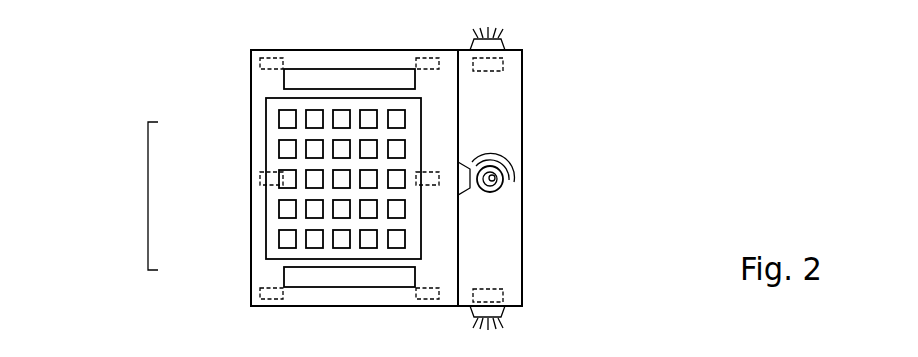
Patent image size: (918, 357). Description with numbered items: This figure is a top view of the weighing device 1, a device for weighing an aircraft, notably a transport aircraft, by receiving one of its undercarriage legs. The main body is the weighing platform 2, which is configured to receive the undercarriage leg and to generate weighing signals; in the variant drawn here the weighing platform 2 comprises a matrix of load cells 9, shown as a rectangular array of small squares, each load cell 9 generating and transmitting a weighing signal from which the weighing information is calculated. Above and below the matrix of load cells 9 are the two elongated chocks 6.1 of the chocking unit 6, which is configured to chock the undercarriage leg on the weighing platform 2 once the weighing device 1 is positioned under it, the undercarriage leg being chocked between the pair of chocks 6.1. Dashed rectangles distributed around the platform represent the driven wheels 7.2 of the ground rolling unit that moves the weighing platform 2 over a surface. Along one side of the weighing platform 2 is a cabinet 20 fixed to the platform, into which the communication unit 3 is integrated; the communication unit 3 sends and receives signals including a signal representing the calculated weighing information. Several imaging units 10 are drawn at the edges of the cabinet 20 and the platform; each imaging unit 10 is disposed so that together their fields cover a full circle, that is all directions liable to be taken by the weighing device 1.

The weighing device 1 is at (128, 51).
The weighing platform 2 is at (292, 52).
The communication unit 3 is at (505, 192).
The chocking unit 6 is at (148, 195).
The chocks 6.1 is at (284, 83).
The driven wheel 7.2 is at (262, 63).
The load cell 9 is at (405, 210).
The imaging unit 10 is at (505, 36).
The cabinet 20 is at (510, 73).